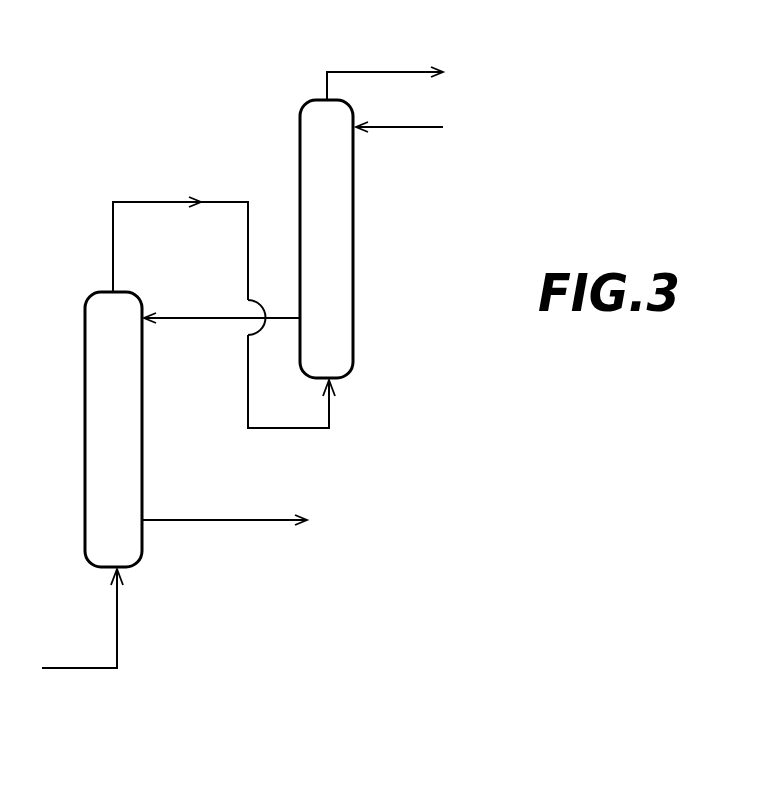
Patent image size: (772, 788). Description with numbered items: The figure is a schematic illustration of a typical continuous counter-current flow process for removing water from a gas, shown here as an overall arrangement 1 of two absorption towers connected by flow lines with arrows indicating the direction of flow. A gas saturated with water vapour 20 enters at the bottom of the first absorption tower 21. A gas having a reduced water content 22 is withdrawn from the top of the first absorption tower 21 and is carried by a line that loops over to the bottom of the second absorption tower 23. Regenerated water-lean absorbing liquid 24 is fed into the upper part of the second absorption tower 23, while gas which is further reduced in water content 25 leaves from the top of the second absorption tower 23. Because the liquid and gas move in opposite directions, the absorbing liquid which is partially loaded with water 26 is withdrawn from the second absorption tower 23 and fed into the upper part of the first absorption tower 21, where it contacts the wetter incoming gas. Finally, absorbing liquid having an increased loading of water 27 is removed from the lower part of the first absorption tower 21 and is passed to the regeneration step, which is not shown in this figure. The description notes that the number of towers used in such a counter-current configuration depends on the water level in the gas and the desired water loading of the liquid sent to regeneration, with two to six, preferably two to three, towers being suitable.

The process system 1 is at (73, 15).
The gas saturated with water vapour 20 is at (83, 670).
The first absorption tower 21 is at (84, 436).
The gas having a reduced water content 22 is at (112, 250).
The second absorption tower 23 is at (355, 247).
The regenerated water-lean absorbing liquid 24 is at (429, 130).
The gas which is further reduced in water content 25 is at (390, 70).
The absorbing liquid which is partially loaded with water 26 is at (193, 322).
The absorbing liquid having an increased loading of water 27 is at (266, 523).